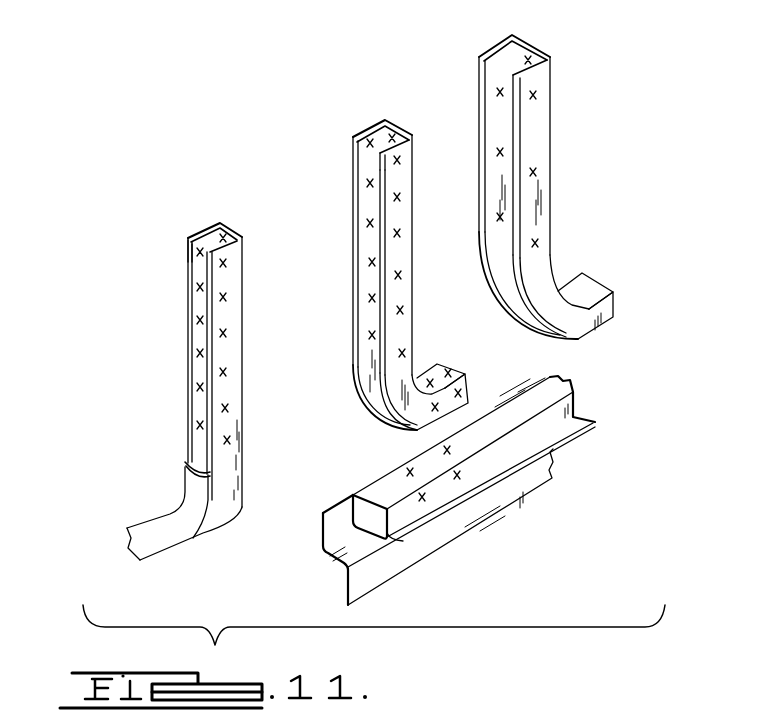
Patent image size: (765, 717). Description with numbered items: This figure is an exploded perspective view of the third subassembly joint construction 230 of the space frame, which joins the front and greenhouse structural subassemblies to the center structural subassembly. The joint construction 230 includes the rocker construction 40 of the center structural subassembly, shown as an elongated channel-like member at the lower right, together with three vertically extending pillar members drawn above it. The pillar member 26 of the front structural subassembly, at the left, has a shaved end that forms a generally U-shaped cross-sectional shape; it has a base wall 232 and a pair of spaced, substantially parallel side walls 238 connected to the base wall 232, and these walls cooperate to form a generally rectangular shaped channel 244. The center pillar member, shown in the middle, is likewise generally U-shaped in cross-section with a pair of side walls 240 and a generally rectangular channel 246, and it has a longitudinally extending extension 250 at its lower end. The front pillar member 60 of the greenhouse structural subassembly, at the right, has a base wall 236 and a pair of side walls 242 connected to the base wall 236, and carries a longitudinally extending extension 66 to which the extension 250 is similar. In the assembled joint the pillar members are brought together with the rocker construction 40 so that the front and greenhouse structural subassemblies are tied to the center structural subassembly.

The pillar member 26 is at (225, 352).
The rocker construction 40 is at (398, 250).
The front pillar member 60 is at (535, 137).
The extension 66 is at (582, 276).
The third subassembly joint construction 230 is at (257, 152).
The base wall 232 is at (222, 238).
The base wall 236 is at (537, 44).
The side walls 238 is at (187, 240).
The side walls 240 is at (360, 133).
The side walls 242 is at (487, 53).
The channel 244 is at (202, 255).
The channel 246 is at (370, 165).
The extension 250 is at (437, 367).